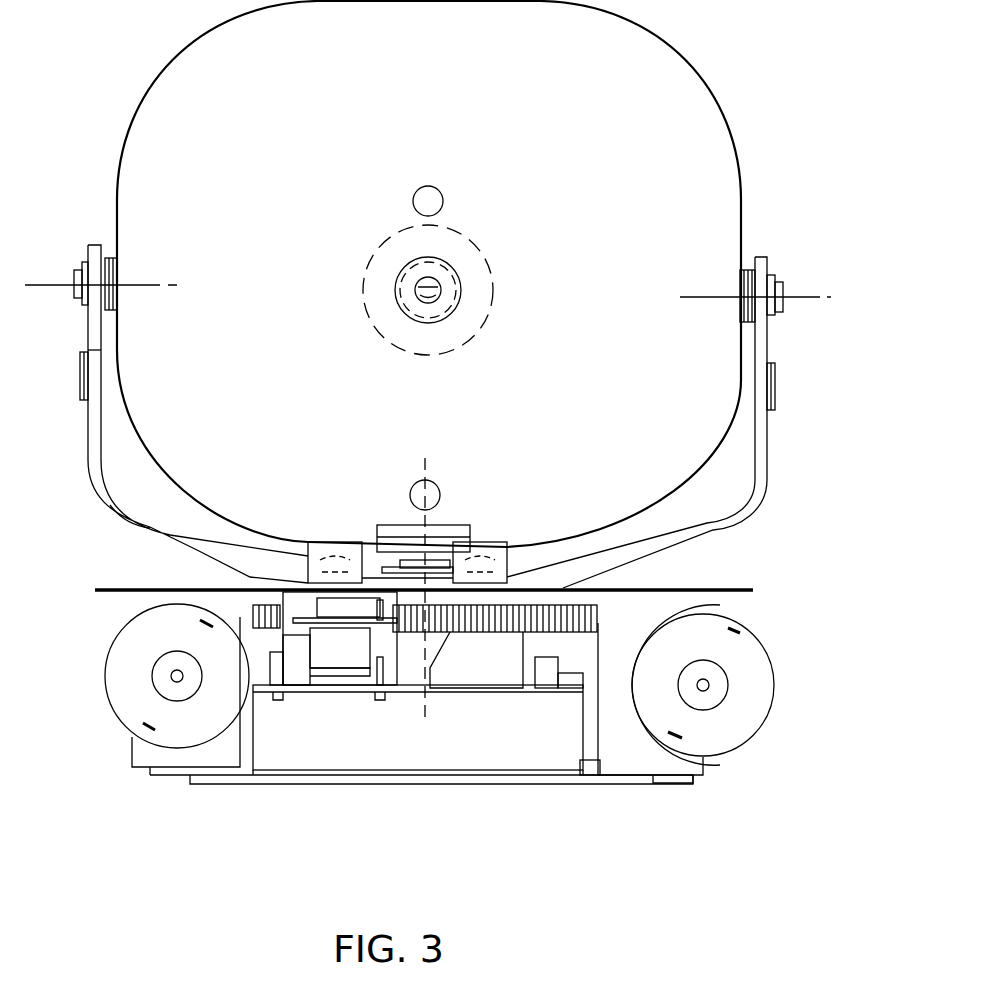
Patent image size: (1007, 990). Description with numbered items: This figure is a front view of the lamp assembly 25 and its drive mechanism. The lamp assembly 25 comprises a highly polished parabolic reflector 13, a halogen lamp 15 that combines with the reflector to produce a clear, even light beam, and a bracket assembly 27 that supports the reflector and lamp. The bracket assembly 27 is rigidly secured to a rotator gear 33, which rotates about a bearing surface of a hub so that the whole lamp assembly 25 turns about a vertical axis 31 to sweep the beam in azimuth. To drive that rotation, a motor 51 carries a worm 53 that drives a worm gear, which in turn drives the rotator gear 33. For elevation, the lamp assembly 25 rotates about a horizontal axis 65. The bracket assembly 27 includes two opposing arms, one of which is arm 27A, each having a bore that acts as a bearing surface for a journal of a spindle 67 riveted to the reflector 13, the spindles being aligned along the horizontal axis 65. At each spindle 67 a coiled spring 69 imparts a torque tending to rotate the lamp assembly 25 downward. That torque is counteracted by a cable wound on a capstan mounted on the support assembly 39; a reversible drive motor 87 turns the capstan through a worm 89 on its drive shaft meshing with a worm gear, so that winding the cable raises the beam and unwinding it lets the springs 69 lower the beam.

The parabolic reflector 13 is at (460, 97).
The halogen lamp 15 is at (447, 278).
The lamp assembly 25 is at (104, 146).
The bracket assembly 27 is at (88, 463).
The arm 27A is at (147, 523).
The vertical axis 31 is at (425, 718).
The rotator gear 33 is at (610, 588).
The support assembly 39 is at (477, 780).
The motor 51 is at (122, 655).
The worm 53 is at (160, 678).
The horizontal axis 65 is at (800, 297).
The spindle 67 is at (72, 293).
The coiled spring 69 is at (110, 253).
The drive motor 87 is at (762, 652).
The worm 89 is at (722, 686).